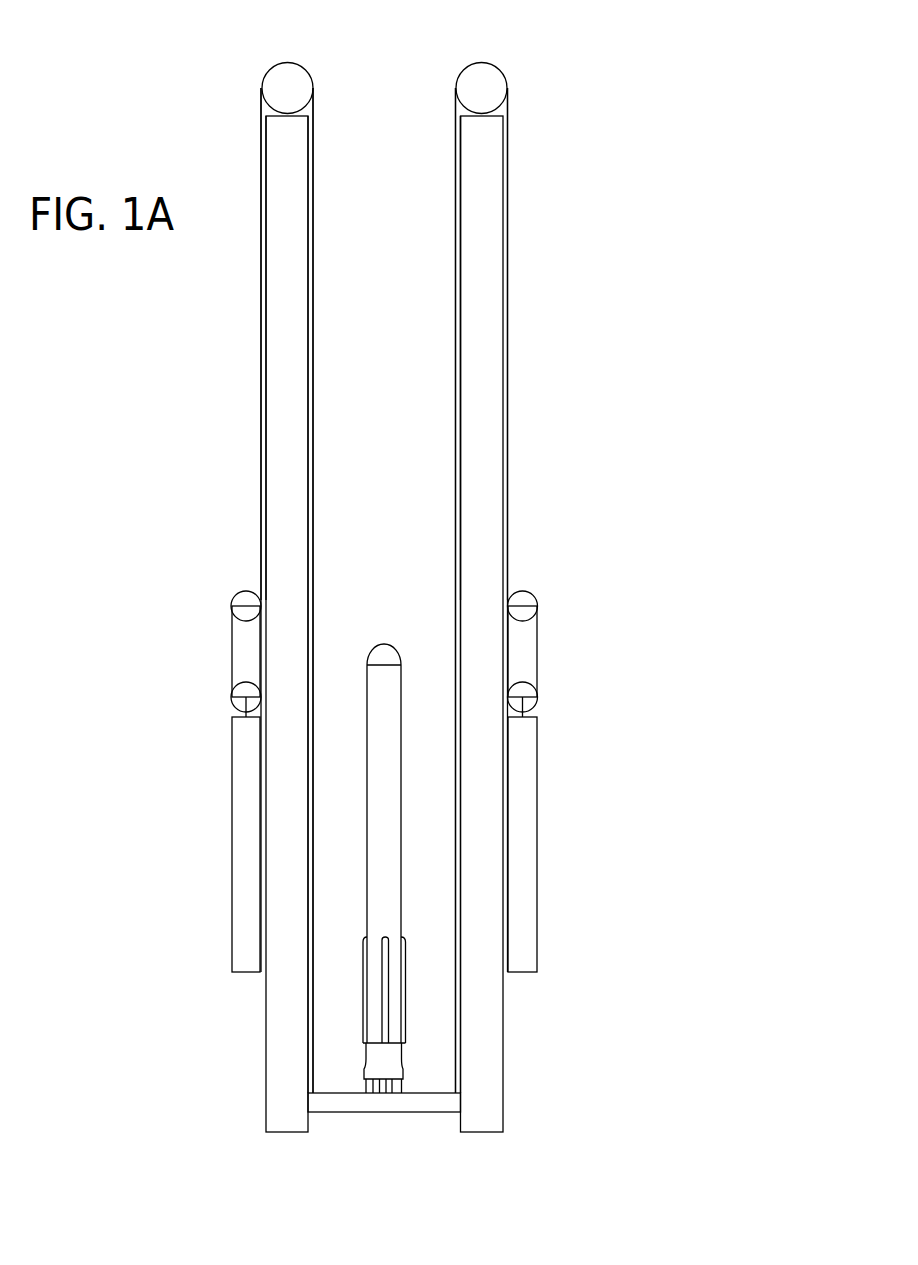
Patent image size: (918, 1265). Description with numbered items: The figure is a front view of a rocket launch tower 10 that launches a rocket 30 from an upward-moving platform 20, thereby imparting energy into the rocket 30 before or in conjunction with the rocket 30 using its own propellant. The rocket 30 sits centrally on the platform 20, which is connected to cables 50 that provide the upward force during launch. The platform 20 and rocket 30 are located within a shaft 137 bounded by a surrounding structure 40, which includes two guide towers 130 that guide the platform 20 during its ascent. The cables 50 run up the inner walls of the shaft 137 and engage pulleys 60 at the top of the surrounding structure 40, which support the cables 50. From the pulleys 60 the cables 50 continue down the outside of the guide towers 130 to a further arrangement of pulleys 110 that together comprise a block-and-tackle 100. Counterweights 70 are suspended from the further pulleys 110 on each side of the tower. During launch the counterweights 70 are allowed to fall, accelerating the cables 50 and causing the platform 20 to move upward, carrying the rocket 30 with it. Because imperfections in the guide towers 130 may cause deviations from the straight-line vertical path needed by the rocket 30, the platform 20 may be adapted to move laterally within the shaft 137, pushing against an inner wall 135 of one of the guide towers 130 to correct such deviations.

The rocket launch tower 10 is at (606, 182).
The platform 20 is at (388, 1102).
The rocket 30 is at (382, 644).
The surrounding structure 40 is at (204, 391).
The cables 50 is at (313, 316).
The pulleys 60 is at (280, 64).
The counterweights 70 is at (240, 865).
The block-and-tackle 100 is at (232, 658).
The further arrangement of pulleys 110 is at (231, 607).
The guide towers 130 is at (288, 445).
The inner wall 135 is at (308, 174).
The shaft 137 is at (397, 55).